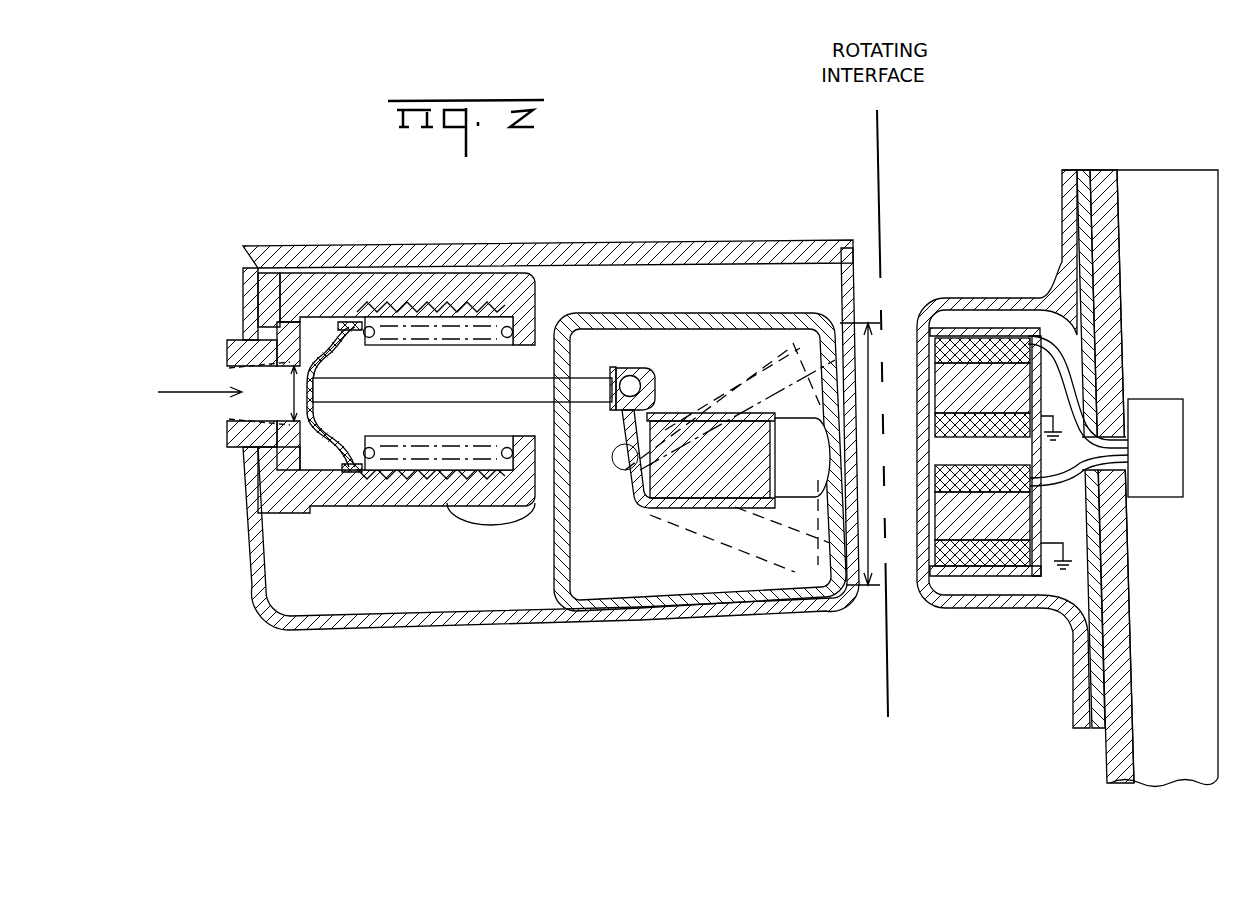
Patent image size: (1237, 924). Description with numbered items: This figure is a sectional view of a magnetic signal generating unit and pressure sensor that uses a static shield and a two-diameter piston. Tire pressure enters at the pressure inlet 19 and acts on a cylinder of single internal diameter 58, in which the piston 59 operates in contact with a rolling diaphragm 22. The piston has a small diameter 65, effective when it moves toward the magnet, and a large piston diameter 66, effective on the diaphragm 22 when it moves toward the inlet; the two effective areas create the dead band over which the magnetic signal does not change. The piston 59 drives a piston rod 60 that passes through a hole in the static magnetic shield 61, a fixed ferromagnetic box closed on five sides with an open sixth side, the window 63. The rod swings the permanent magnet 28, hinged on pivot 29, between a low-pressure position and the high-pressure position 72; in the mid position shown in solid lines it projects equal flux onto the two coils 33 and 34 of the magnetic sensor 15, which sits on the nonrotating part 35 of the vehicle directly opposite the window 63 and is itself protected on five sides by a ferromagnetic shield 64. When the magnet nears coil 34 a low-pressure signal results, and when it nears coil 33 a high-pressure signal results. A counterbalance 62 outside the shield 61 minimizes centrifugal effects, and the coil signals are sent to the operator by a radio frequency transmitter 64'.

The magnetic sensor 15 is at (903, 572).
The fluid inlet 19 is at (176, 392).
The rolling diaphragm 22 is at (334, 451).
The permanent magnet 28 is at (796, 498).
The pivot 29 is at (623, 463).
The coil 33 is at (1018, 522).
The coil 34 is at (1018, 390).
The stationary shell 35 is at (957, 297).
The single internal diameter 58 is at (410, 316).
The piston 59 is at (368, 486).
The piston rod 60 is at (591, 397).
The static magnetic shield 61 is at (680, 319).
The counterbalance 62 is at (490, 512).
The window 63 is at (893, 374).
The ferromagnetic shield 64 is at (985, 416).
The radio frequency transmitter 64' is at (1111, 438).
The small diameter 65 is at (286, 393).
The large piston diameter 66 is at (340, 338).
The position 72 is at (810, 557).